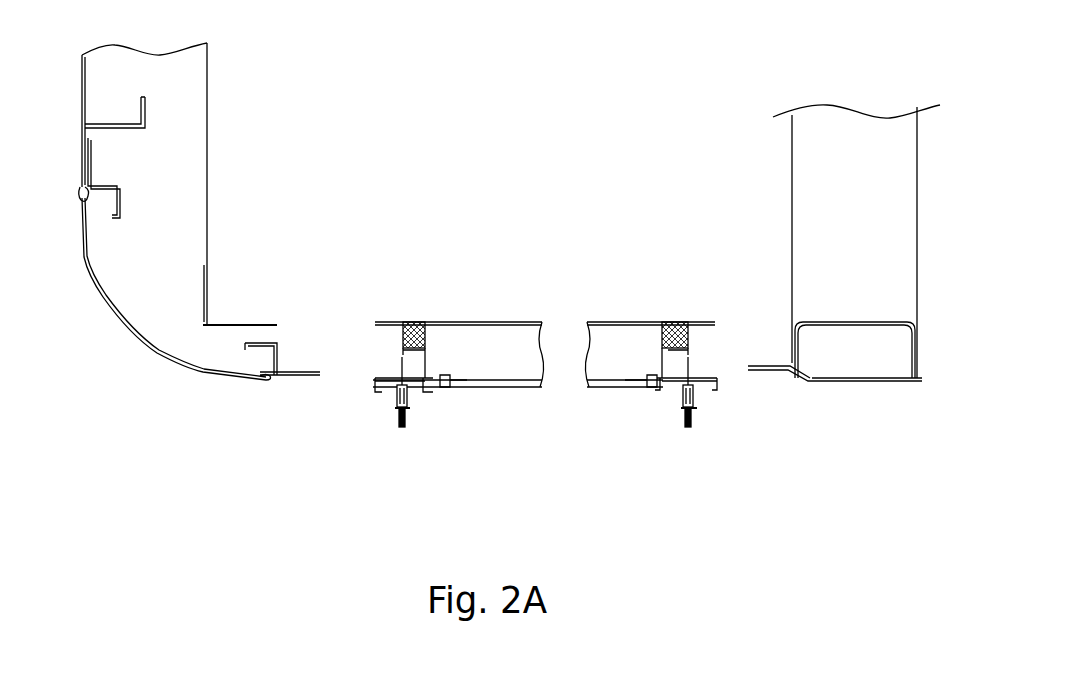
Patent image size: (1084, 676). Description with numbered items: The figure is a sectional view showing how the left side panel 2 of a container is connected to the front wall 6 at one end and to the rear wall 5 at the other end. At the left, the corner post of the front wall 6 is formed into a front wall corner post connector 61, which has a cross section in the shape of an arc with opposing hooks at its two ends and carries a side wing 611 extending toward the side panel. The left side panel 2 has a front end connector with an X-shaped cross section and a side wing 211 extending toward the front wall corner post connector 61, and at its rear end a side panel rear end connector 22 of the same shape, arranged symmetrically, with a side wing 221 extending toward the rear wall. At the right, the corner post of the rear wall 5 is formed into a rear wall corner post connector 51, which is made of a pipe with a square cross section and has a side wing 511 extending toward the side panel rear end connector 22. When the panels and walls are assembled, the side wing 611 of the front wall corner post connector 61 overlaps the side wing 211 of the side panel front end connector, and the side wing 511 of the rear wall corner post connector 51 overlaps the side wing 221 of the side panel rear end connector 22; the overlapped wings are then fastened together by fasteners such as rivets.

The left side panel 2 is at (497, 358).
The rear wall 5 is at (855, 187).
The front wall 6 is at (163, 182).
The side panel rear end connector 22 is at (668, 367).
The rear wall corner post connector 51 is at (845, 348).
The front wall corner post connector 61 is at (200, 363).
The side wing 211 is at (375, 378).
The side wing 221 is at (707, 378).
The side wing 511 is at (760, 368).
The side wing 611 is at (302, 375).